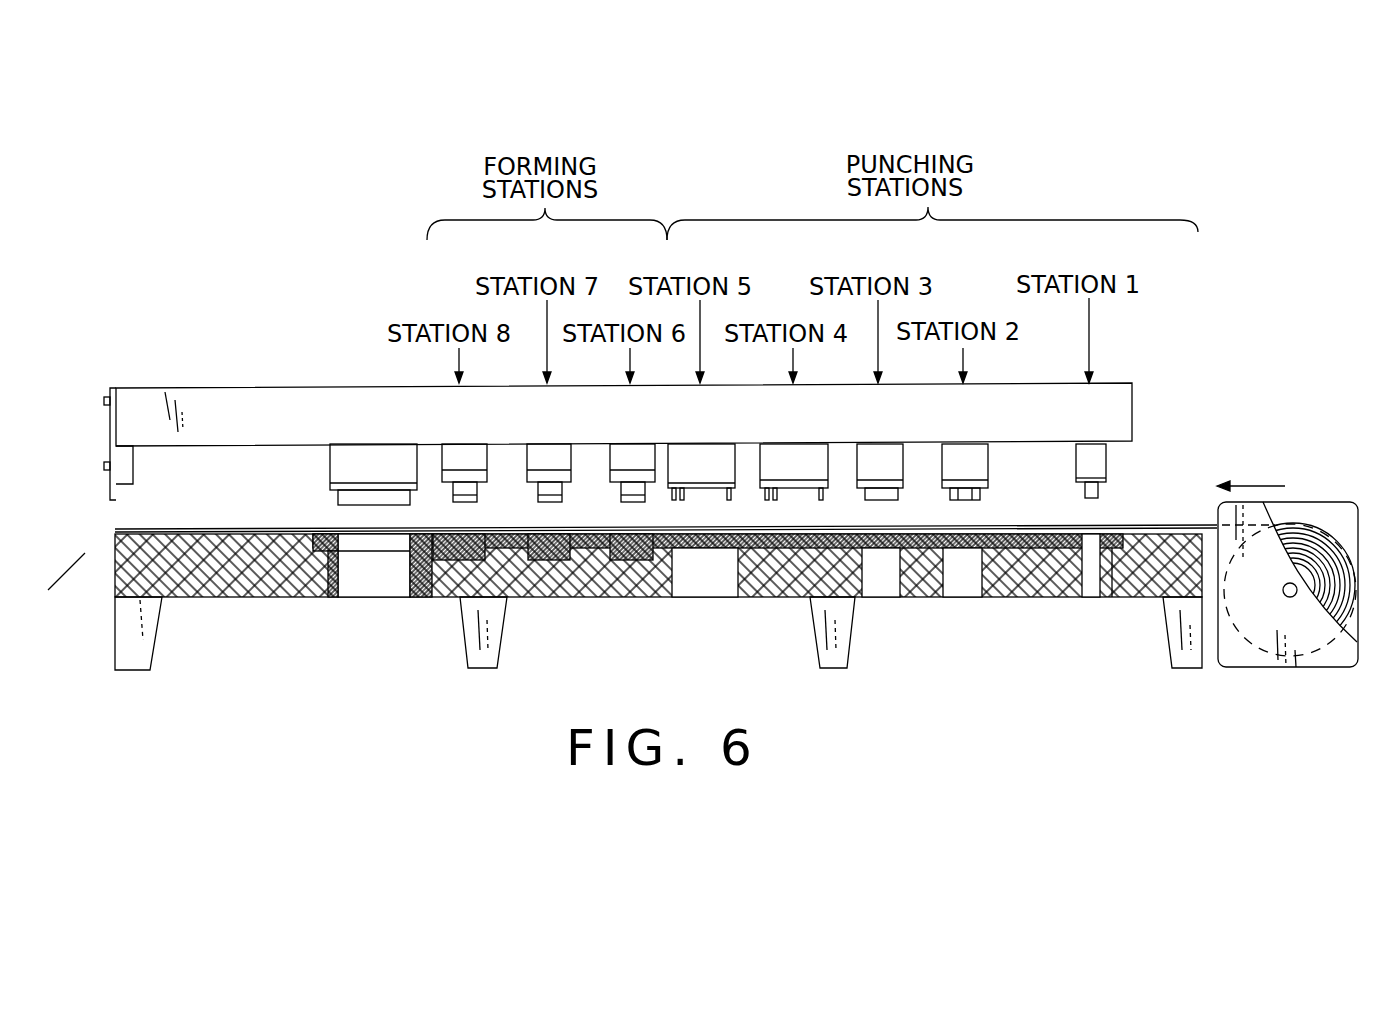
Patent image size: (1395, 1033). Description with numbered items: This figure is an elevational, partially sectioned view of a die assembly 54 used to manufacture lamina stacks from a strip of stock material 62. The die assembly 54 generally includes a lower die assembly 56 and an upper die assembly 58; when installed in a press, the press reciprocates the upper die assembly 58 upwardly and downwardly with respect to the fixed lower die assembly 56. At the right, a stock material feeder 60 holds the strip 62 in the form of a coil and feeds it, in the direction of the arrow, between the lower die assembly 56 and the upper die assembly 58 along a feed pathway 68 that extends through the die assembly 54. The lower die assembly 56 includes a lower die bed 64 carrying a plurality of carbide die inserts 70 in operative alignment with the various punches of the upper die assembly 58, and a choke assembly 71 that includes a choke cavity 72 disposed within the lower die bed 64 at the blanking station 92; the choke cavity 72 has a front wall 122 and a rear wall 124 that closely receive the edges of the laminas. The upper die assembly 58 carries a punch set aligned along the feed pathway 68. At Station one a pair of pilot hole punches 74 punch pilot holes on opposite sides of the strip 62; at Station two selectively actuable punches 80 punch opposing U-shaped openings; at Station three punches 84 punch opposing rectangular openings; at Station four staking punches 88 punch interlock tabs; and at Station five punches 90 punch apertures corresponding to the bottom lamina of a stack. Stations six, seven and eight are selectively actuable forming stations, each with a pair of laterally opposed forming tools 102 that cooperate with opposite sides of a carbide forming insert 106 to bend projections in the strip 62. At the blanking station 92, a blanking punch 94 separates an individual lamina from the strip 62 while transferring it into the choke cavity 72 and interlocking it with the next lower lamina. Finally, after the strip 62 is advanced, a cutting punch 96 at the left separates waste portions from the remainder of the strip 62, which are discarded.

The die assembly 54 is at (1220, 222).
The lower die assembly 56 is at (1016, 632).
The upper die assembly 58 is at (1152, 397).
The stock material feeder 60 is at (1325, 512).
The strip of stock material 62 is at (1157, 523).
The lower die bed 64 is at (1147, 588).
The feed pathway 68 is at (1118, 500).
The carbide die inserts 70 is at (706, 590).
The choke assembly 71 is at (312, 520).
The choke cavity 72 is at (352, 566).
The pilot hole punches 74 is at (1090, 458).
The selectively actuable punches 80 is at (966, 458).
The selectively actuable punches 84 is at (880, 458).
The staking punches 88 is at (796, 458).
The selectively actuable punches 90 is at (703, 458).
The blanking station 92 is at (365, 378).
The blanking punch 94 is at (372, 462).
The cutting punch 96 is at (110, 435).
The forming tools 102 is at (462, 458).
The carbide forming insert 106 is at (455, 575).
The front wall 122 is at (348, 575).
The rear wall 124 is at (418, 585).